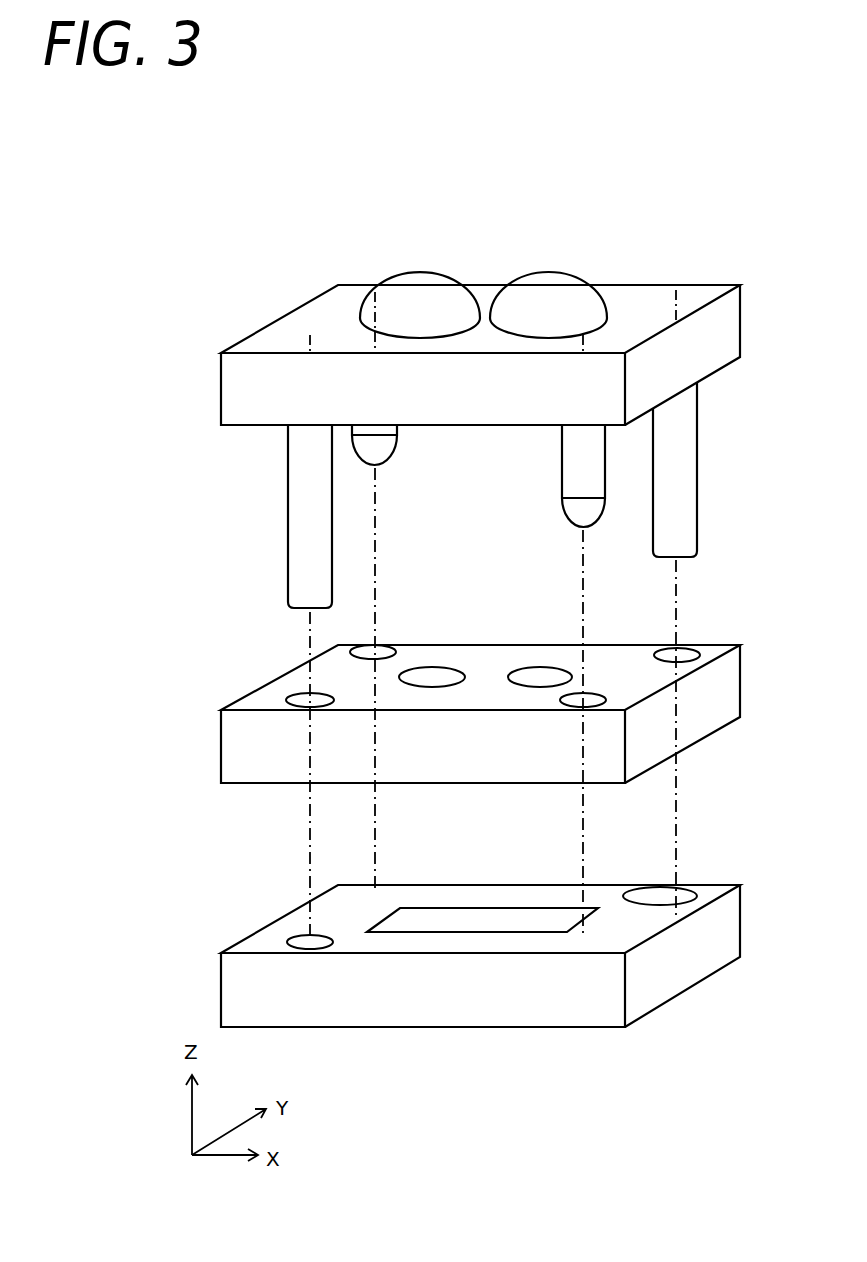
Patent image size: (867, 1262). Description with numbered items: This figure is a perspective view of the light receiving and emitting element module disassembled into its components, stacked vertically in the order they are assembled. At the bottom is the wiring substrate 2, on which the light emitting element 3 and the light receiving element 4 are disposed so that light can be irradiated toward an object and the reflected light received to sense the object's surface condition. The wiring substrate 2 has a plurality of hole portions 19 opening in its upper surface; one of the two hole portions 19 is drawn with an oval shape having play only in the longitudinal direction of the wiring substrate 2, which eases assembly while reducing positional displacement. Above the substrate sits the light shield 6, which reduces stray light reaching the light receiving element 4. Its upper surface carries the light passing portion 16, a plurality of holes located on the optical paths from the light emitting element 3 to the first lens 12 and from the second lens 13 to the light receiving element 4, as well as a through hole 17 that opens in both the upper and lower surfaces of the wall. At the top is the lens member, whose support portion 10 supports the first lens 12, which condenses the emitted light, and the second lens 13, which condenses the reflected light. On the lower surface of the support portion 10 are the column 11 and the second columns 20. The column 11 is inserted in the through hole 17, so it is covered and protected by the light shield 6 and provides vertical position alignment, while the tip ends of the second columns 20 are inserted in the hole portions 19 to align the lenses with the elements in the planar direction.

The wiring substrate 2 is at (352, 887).
The light emitting element 3 is at (482, 884).
The light receiving element 4 is at (496, 922).
The light shield 6 is at (598, 665).
The support portion 10 is at (702, 297).
The column 11 is at (573, 476).
The first lens 12 is at (425, 303).
The second lens 13 is at (577, 307).
The light passing portion 16 is at (435, 675).
The through hole 17 is at (687, 655).
The hole portion 19 is at (690, 890).
The second column 20 is at (690, 490).